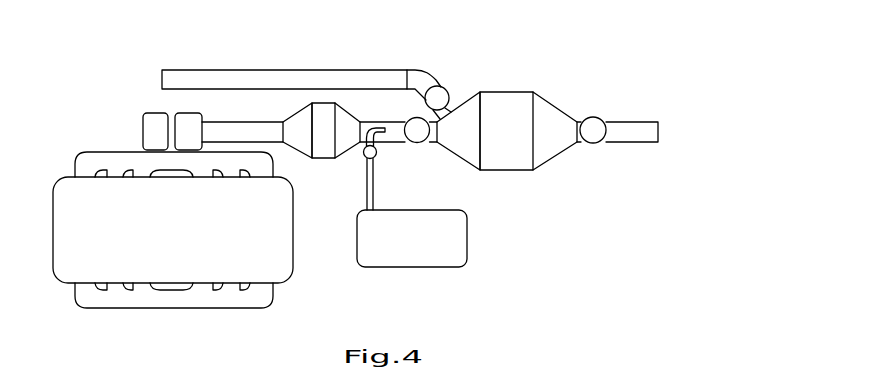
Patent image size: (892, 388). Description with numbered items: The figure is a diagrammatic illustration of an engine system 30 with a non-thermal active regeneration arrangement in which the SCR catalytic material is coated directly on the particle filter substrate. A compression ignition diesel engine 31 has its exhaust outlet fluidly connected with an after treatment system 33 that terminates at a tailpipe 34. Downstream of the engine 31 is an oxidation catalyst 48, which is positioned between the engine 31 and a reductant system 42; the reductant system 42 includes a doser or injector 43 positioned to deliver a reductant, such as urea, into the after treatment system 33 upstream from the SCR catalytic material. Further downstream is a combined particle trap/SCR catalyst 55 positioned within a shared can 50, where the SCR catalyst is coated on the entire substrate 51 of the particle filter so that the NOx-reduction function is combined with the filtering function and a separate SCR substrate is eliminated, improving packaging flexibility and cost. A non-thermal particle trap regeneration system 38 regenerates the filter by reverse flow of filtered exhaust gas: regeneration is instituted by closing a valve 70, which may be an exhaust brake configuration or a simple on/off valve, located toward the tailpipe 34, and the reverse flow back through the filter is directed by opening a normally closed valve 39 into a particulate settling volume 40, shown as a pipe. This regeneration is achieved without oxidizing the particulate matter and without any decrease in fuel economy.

The engine system 30 is at (351, 33).
The compression ignition diesel engine 31 is at (276, 294).
The after treatment system 33 is at (533, 232).
The tailpipe 34 is at (633, 142).
The non-thermal particle trap regeneration system 38 is at (451, 60).
The valve 39 is at (440, 86).
The particulate settling volume 40 is at (236, 63).
The reductant system 42 is at (421, 274).
The doser or injector 43 is at (389, 152).
The oxidation catalyst 48 is at (350, 157).
The shared can 50 is at (527, 92).
The substrate 51 is at (505, 145).
The combined particle trap/SCR catalyst 55 is at (509, 81).
The valve 70 is at (598, 108).